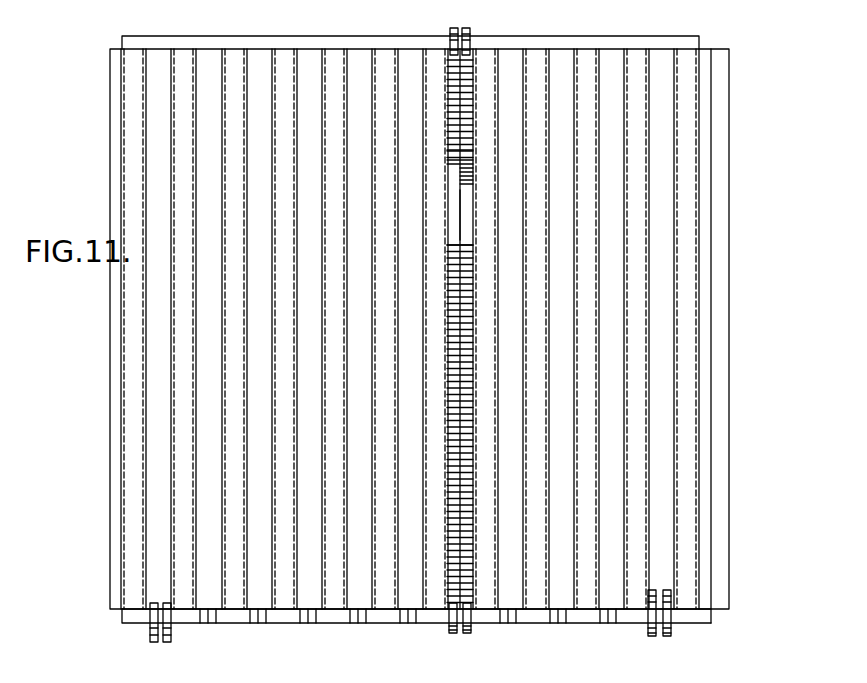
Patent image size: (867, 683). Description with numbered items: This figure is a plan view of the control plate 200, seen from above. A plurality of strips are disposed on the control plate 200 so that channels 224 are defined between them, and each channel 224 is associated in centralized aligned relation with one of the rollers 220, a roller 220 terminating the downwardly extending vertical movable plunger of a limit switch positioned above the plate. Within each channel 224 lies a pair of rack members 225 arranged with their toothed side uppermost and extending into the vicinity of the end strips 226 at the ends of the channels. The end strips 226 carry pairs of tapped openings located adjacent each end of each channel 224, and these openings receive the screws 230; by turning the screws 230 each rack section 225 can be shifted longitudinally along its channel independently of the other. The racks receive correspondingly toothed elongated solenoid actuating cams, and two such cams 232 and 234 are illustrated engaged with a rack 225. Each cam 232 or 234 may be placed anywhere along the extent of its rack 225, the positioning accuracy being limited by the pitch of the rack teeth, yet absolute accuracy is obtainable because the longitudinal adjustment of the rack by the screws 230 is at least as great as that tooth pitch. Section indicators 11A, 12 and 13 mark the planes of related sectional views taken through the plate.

The control plate 200 is at (716, 510).
The roller 220 is at (468, 296).
The channel 224 is at (558, 590).
The rack member 225 is at (443, 155).
The end strip 226 is at (588, 45).
The screw 230 is at (450, 633).
The solenoid actuating cam 232 is at (443, 248).
The solenoid actuating cam 234 is at (465, 219).
The section line 11A is at (473, 128).
The section line 12 is at (70, 458).
The section line 13 is at (70, 35).